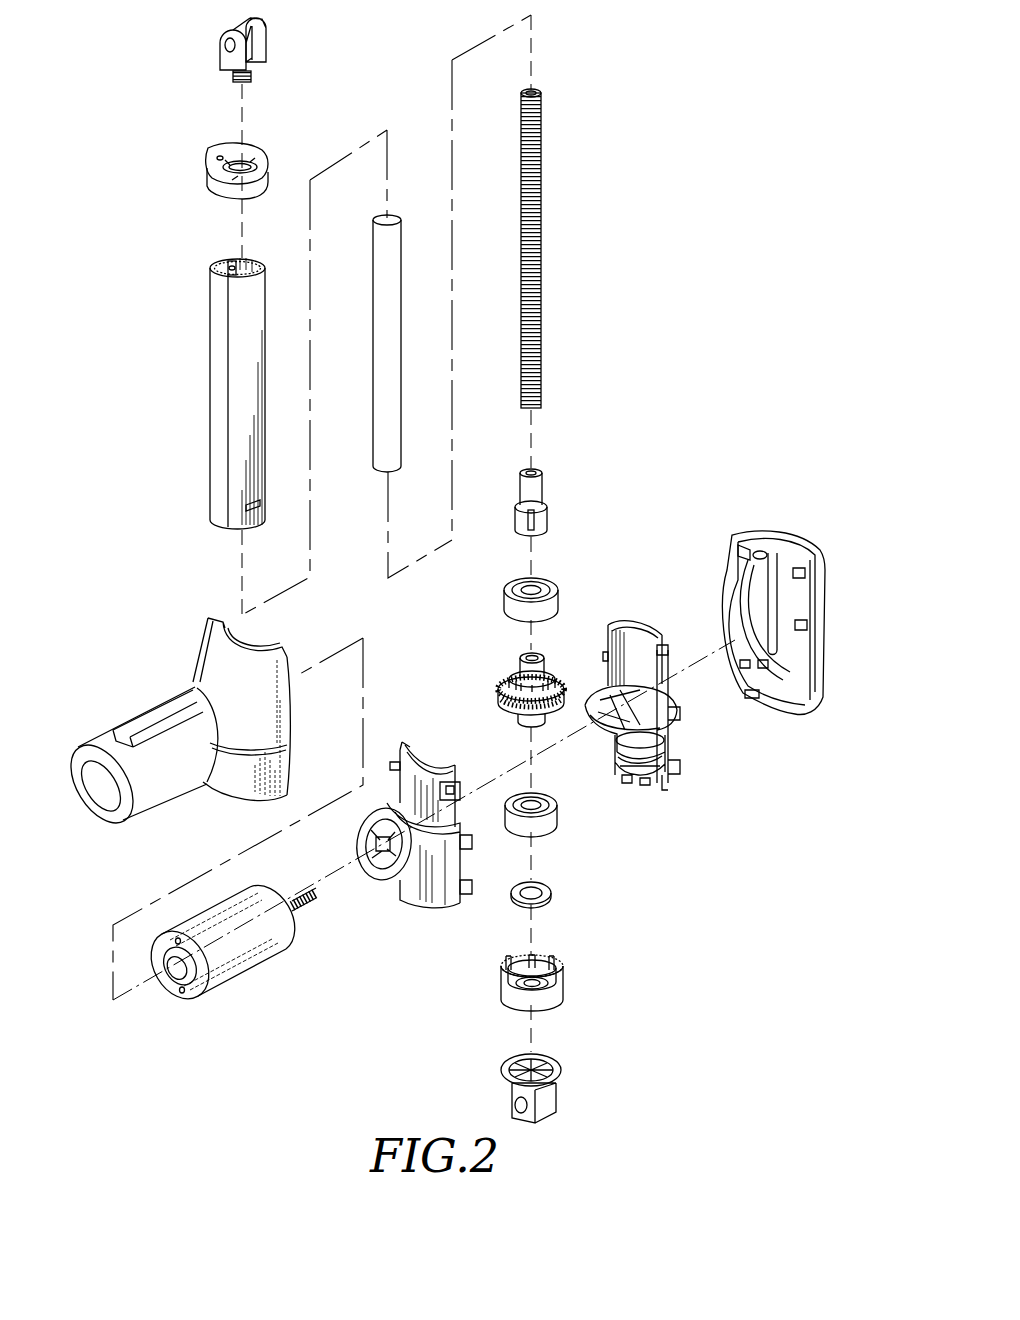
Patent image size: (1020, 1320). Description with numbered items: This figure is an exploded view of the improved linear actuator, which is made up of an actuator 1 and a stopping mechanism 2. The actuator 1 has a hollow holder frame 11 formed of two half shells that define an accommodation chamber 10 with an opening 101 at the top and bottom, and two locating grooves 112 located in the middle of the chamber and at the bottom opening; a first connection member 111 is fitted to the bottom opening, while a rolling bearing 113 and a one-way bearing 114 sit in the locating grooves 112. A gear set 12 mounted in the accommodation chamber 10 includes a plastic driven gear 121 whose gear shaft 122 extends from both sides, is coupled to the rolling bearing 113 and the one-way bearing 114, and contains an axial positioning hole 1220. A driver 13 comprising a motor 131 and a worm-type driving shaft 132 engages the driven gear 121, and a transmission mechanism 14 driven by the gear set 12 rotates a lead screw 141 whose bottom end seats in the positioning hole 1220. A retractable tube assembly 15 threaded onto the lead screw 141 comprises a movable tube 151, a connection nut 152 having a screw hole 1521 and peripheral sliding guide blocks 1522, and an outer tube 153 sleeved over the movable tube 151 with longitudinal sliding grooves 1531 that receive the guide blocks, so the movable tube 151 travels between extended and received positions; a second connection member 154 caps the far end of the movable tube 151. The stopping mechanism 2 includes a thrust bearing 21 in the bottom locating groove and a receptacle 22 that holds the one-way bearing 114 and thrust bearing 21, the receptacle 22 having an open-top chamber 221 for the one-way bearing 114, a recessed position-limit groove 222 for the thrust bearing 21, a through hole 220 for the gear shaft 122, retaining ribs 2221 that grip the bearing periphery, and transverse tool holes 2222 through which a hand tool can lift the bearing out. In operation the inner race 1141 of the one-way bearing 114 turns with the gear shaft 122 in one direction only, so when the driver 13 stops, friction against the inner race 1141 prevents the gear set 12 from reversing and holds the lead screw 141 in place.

The actuator 1 is at (627, 823).
The accommodation chamber 10 is at (651, 691).
The opening 101 is at (633, 630).
The hollow holder frame 11 is at (665, 660).
The first connection member 111 is at (560, 1066).
The locating grooves 112 is at (632, 738).
The rolling bearing 113 is at (512, 607).
The one-way bearing 114 is at (574, 825).
The inner race 1141 is at (555, 803).
The gear set 12 is at (499, 691).
The driven gear 121 is at (510, 695).
The gear shaft 122 is at (496, 661).
The positioning hole 1220 is at (526, 655).
The driver 13 is at (255, 960).
The motor 131 is at (252, 957).
The driving shaft 132 is at (308, 898).
The transmission mechanism 14 is at (574, 248).
The lead screw 141 is at (541, 249).
The retractable tube assembly 15 is at (229, 426).
The movable tube 151 is at (378, 474).
The connection nut 152 is at (581, 497).
The screw hole 1521 is at (538, 472).
The sliding guide blocks 1522 is at (545, 527).
The outer tube 153 is at (202, 393).
The longitudinal sliding grooves 1531 is at (232, 278).
The second connection member 154 is at (224, 58).
The stopping mechanism 2 is at (553, 948).
The thrust bearing 21 is at (571, 893).
The receptacle 22 is at (527, 972).
The through hole 220 is at (556, 968).
The open-top chamber 221 is at (558, 956).
The recessed position-limit groove 222 is at (513, 990).
The retaining ribs 2221 is at (515, 966).
The transverse tool holes 2222 is at (509, 976).